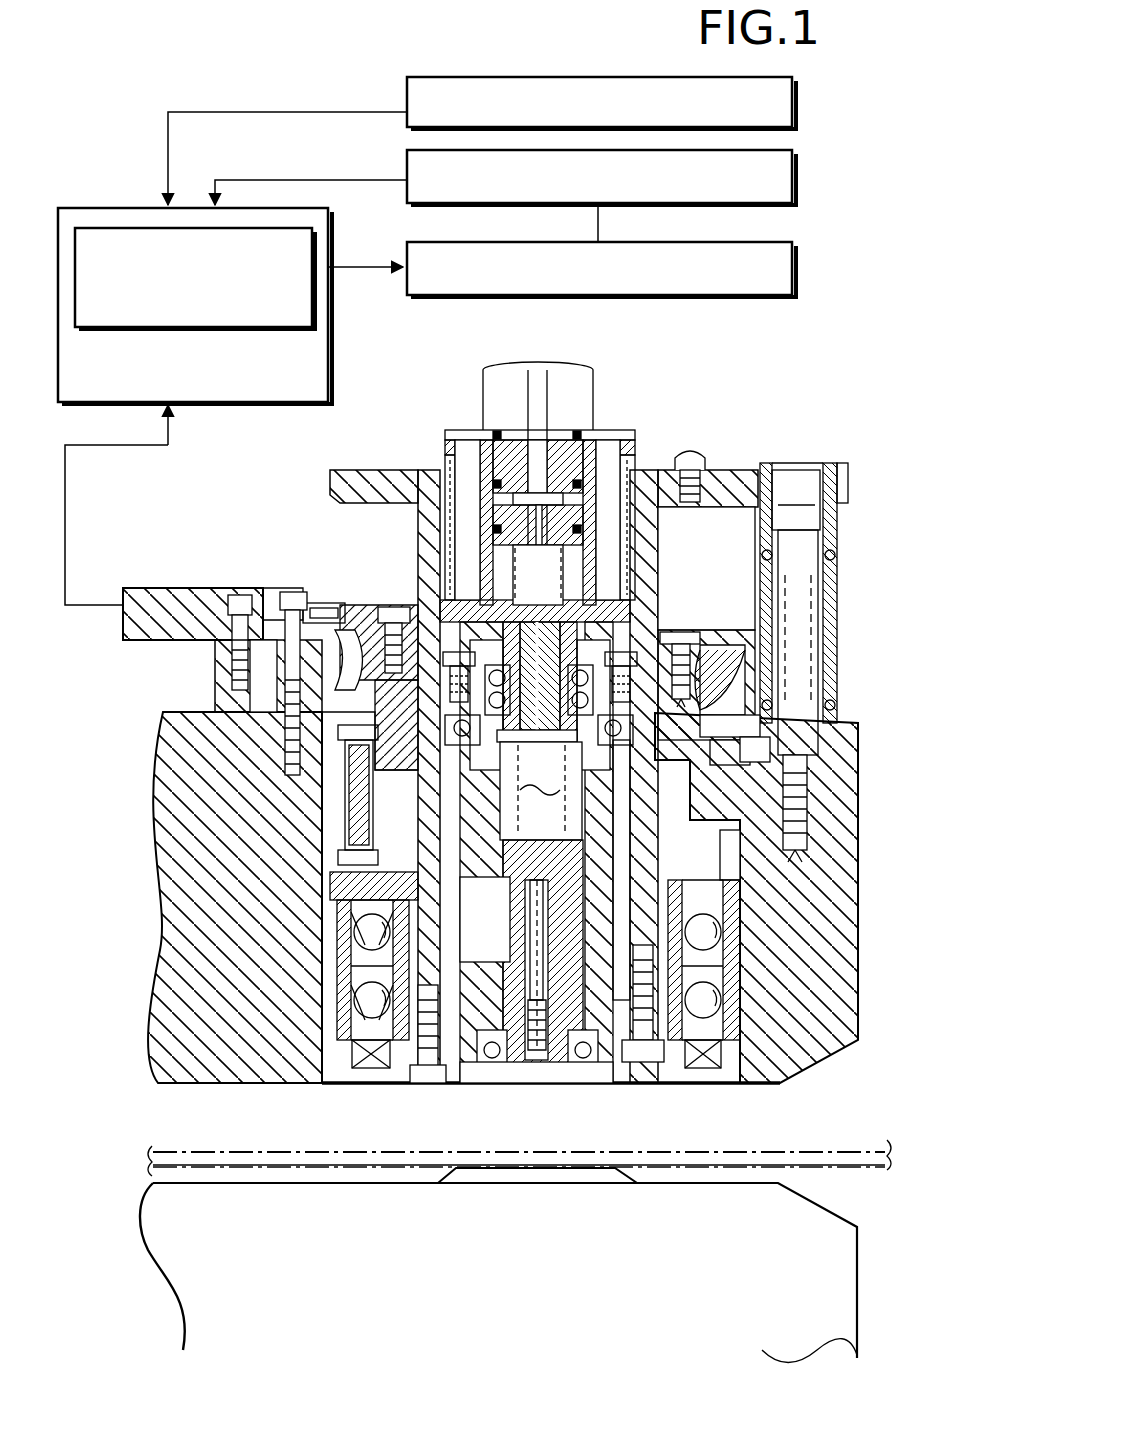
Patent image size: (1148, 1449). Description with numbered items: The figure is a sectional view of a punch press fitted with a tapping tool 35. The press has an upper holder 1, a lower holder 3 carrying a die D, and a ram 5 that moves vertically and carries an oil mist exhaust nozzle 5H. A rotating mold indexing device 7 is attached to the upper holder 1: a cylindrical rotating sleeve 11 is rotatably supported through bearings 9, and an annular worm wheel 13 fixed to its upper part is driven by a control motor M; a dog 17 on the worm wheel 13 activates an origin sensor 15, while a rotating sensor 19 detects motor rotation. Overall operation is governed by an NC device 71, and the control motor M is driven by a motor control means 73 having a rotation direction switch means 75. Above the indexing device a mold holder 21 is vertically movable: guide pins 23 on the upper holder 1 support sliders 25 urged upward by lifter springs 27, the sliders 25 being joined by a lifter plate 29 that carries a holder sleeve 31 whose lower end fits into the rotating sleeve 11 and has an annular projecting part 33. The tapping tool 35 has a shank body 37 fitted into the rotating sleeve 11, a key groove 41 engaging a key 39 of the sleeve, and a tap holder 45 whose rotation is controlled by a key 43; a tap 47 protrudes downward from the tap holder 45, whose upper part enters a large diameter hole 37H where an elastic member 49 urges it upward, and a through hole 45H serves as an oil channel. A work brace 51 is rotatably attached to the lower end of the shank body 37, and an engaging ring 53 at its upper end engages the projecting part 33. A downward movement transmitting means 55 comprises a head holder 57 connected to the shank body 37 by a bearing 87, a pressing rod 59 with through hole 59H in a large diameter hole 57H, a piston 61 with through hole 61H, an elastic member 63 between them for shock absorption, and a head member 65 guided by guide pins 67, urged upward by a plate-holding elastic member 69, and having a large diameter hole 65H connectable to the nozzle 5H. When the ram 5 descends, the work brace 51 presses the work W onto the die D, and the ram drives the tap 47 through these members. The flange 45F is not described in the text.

The upper holder 1 is at (160, 748).
The lower holder 3 is at (148, 1238).
The ram 5 is at (500, 372).
The oil mist exhaust nozzle 5H is at (538, 428).
The rotating mold indexing device 7 is at (300, 792).
The bearings 9 is at (345, 990).
The rotating sleeve 11 is at (350, 930).
The worm wheel 13 is at (295, 770).
The origin sensor 15 is at (195, 588).
The dog 17 is at (300, 590).
The rotating sensor 19 is at (794, 177).
The mold holder 21 is at (738, 455).
The guide pins 23 is at (808, 658).
The sliders 25 is at (835, 518).
The lifter springs 27 is at (836, 560).
The lifter plate 29 is at (725, 470).
The holder sleeve 31 is at (668, 532).
The annular projecting part 33 is at (375, 822).
The tapping tool 35 is at (805, 792).
The shank body 37 is at (760, 900).
The large diameter hole 37H is at (740, 840).
The key 39 is at (639, 1084).
The key groove 41 is at (702, 1028).
The key 43 is at (735, 935).
The tap holder 45 is at (745, 982).
The flange 45F is at (790, 748).
The through hole 45H is at (360, 878).
The tap 47 is at (525, 1084).
The elastic member 49 is at (505, 870).
The work brace 51 is at (475, 1084).
The engaging ring 53 is at (761, 721).
The downward movement transmitting means 55 is at (612, 425).
The head holder 57 is at (658, 583).
The large diameter hole 57H is at (656, 615).
The pressing rod 59 is at (440, 560).
The through hole 59H is at (455, 603).
The piston 61 is at (478, 490).
The through hole 61H is at (492, 520).
The elastic member 63 is at (640, 500).
The head member 65 is at (598, 428).
The large diameter hole 65H is at (508, 392).
The guide pins 67 is at (604, 478).
The plate-holding elastic member 69 is at (445, 468).
The NC device 71 is at (794, 103).
The motor control means 73 is at (328, 293).
The rotation direction switch means 75 is at (130, 228).
The bearing 87 is at (485, 760).
The control motor M is at (794, 268).
The work W is at (178, 1152).
The die D is at (525, 1183).